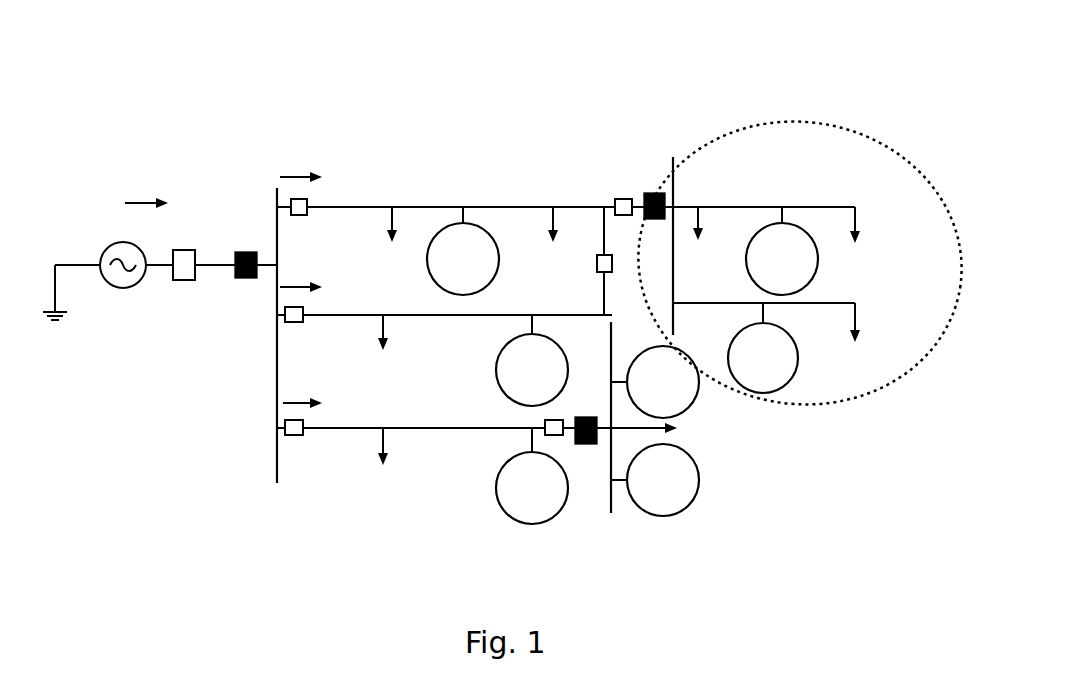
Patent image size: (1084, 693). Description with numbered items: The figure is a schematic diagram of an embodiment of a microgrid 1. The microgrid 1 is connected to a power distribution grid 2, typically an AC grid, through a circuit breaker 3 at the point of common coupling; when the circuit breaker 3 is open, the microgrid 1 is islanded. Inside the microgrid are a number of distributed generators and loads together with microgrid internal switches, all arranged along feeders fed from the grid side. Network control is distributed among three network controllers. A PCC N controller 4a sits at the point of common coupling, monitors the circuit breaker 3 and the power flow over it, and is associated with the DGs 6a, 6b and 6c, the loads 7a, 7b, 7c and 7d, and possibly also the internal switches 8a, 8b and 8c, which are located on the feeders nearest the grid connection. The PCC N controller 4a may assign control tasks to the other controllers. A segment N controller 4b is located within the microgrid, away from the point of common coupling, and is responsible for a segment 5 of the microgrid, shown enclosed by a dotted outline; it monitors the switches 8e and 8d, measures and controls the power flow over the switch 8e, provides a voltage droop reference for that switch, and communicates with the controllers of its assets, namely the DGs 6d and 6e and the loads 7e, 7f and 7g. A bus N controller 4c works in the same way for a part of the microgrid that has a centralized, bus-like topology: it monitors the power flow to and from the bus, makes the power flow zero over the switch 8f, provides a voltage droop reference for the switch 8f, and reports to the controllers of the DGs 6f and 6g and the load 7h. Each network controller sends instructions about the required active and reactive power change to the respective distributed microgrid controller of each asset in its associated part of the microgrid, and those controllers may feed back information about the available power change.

The microgrid 1 is at (791, 88).
The power distribution grid 2 is at (123, 289).
The circuit breaker 3 is at (183, 281).
The PCC N controller 4a is at (244, 279).
The segment N controller 4b is at (673, 195).
The bus N controller 4c is at (588, 446).
The segment 5 is at (860, 158).
The DG 6a is at (463, 225).
The DG 6b is at (499, 387).
The DG 6c is at (500, 505).
The DG 6d is at (797, 225).
The DG 6e is at (798, 358).
The DG 6f is at (698, 396).
The DG 6g is at (698, 497).
The load 7a is at (346, 276).
The load 7b is at (527, 301).
The load 7c is at (358, 379).
The load 7d is at (361, 496).
The load 7e is at (733, 262).
The load 7f is at (859, 284).
The load 7g is at (849, 371).
The load 7h is at (733, 457).
The internal switch 8a is at (306, 199).
The internal switch 8b is at (303, 307).
The internal switch 8c is at (303, 420).
The internal switch 8d is at (612, 262).
The internal switch 8e is at (619, 199).
The internal switch 8f is at (562, 420).